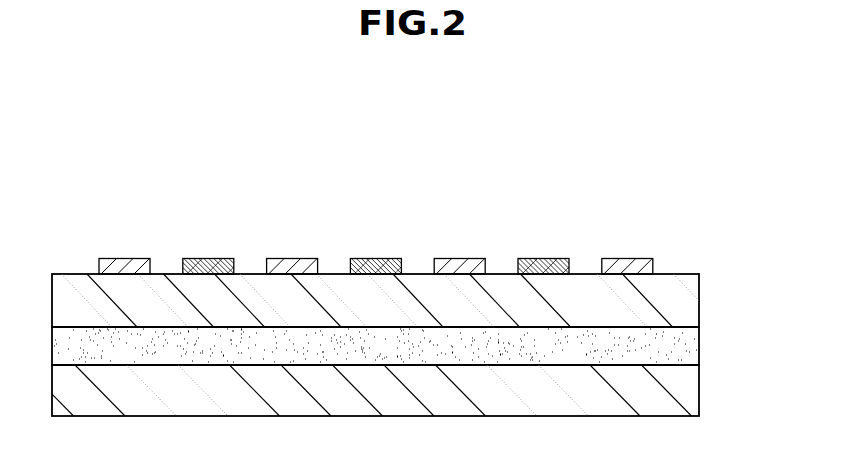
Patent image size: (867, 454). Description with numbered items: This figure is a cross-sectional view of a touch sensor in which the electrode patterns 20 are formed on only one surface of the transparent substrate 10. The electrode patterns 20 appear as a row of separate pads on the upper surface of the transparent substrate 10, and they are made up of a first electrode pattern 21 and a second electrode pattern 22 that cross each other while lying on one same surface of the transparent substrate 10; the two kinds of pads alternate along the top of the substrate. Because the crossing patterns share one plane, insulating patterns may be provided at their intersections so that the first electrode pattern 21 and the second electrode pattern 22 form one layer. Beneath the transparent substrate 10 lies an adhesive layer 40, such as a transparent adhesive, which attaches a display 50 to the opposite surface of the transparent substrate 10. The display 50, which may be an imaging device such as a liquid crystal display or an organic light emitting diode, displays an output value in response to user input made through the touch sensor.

The transparent substrate 10 is at (682, 304).
The electrode patterns 20 is at (376, 189).
The first electrode pattern 21 is at (116, 239).
The second electrode pattern 22 is at (207, 214).
The adhesive layer 40 is at (682, 351).
The display 50 is at (682, 398).